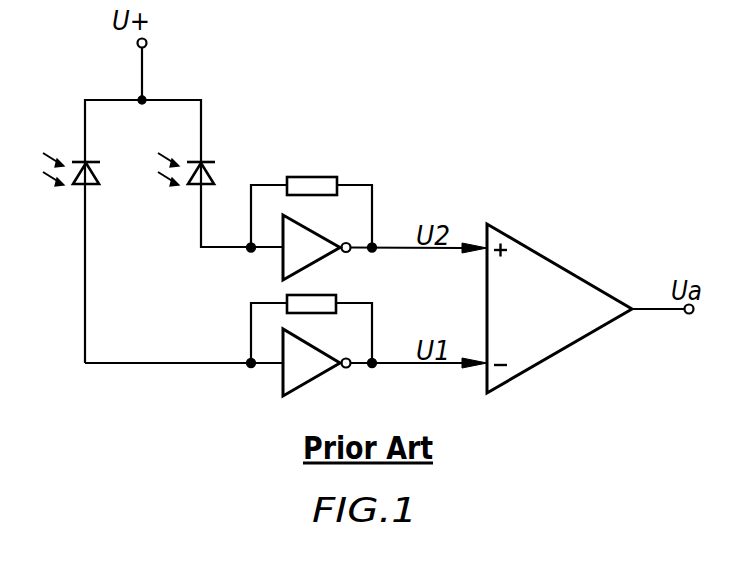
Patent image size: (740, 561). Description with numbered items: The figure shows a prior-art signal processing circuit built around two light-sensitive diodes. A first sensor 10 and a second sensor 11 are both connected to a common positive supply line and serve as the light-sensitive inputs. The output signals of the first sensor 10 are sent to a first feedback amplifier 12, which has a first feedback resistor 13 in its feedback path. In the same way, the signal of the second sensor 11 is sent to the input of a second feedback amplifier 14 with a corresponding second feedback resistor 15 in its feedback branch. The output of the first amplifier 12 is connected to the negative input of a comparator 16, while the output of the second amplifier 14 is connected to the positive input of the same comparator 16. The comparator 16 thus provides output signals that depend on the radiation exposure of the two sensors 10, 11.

The first sensor 10 is at (80, 186).
The second sensor 11 is at (195, 186).
The first feedback amplifier 12 is at (282, 383).
The first feedback resistor 13 is at (337, 293).
The second feedback amplifier 14 is at (282, 262).
The second feedback resistor 15 is at (305, 177).
The comparator 16 is at (565, 350).